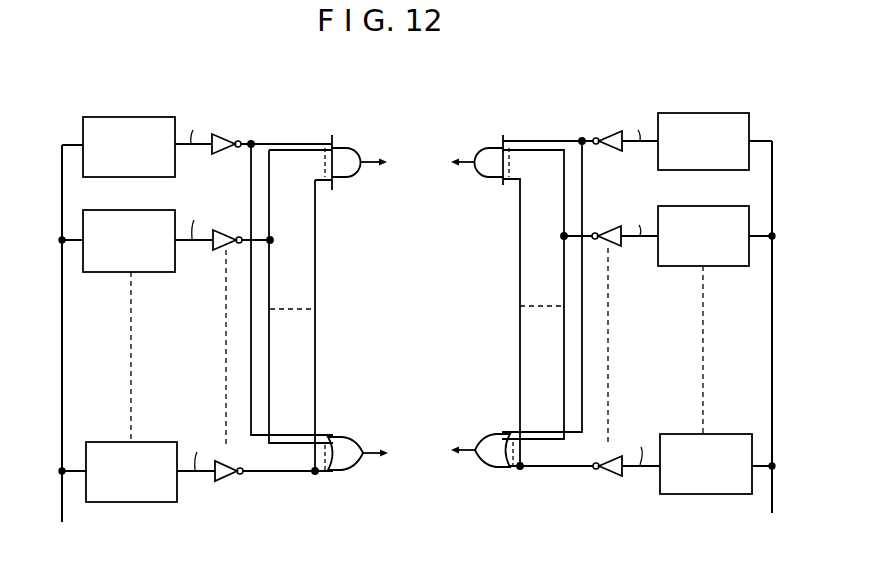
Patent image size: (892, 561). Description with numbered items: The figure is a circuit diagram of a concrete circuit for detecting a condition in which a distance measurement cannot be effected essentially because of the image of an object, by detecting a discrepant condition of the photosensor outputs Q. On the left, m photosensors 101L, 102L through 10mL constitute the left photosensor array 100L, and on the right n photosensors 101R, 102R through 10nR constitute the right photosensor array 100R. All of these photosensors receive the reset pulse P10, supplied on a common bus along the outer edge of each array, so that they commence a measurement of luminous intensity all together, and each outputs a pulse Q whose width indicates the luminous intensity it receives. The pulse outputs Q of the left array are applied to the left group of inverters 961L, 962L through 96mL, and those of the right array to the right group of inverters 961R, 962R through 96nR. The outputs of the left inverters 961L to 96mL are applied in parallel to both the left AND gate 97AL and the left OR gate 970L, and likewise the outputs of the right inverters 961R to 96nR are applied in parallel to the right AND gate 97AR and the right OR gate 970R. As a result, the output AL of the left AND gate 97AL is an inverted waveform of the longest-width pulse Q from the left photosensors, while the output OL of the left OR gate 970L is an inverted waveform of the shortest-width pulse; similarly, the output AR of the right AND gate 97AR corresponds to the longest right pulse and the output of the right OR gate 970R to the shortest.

The left photosensor array 100L is at (147, 73).
The right photosensor array 100R is at (722, 68).
The photosensor 101L is at (149, 117).
The photosensor 102L is at (109, 272).
The photosensor 10mL is at (165, 502).
The photosensor 101R is at (727, 113).
The photosensor 102R is at (740, 266).
The photosensor 10nR is at (703, 494).
The inverter 961L is at (223, 137).
The inverter 962L is at (216, 251).
The inverter 96mL is at (236, 476).
The inverter 961R is at (608, 136).
The inverter 962R is at (612, 249).
The inverter 96nR is at (606, 477).
The left AND gate 97AL is at (350, 179).
The right AND gate 97AR is at (486, 179).
The left OR gate 970L is at (347, 471).
The right OR gate 970R is at (497, 469).
The reset pulse P10 is at (425, 346).